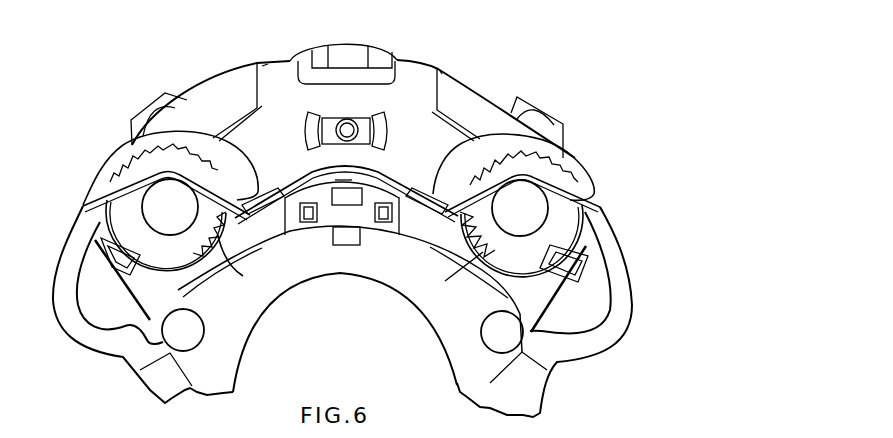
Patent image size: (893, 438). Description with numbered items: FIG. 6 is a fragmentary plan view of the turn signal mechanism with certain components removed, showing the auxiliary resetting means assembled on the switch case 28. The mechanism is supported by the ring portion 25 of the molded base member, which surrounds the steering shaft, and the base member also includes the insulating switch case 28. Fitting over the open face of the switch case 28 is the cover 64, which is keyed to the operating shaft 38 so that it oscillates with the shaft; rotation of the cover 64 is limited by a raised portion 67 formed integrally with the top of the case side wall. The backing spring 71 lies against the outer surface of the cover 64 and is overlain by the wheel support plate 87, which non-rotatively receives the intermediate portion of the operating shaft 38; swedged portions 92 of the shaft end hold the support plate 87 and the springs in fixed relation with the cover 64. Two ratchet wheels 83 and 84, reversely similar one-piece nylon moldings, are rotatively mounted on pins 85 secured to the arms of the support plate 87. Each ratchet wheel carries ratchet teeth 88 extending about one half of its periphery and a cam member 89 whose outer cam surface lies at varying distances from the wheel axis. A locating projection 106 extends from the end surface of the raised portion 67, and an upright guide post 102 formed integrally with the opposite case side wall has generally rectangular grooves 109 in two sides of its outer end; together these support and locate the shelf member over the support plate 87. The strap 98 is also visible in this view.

The ring portion 25 is at (438, 326).
The switch case 28 is at (552, 122).
The operating shaft 38 is at (339, 119).
The cover 64 is at (477, 99).
The raised portion 67 is at (397, 58).
The backing spring 71 is at (273, 70).
The ratchet wheel 83 is at (175, 253).
The ratchet wheel 84 is at (497, 260).
The pin 85 is at (183, 218).
The wheel support plate 87 is at (423, 80).
The ratchet teeth 88 is at (350, 263).
The cam member 89 is at (238, 182).
The swedged portions 92 is at (307, 127).
The strap 98 is at (128, 193).
The guide post 102 is at (364, 220).
The locating projection 106 is at (358, 52).
The grooves 109 is at (307, 214).